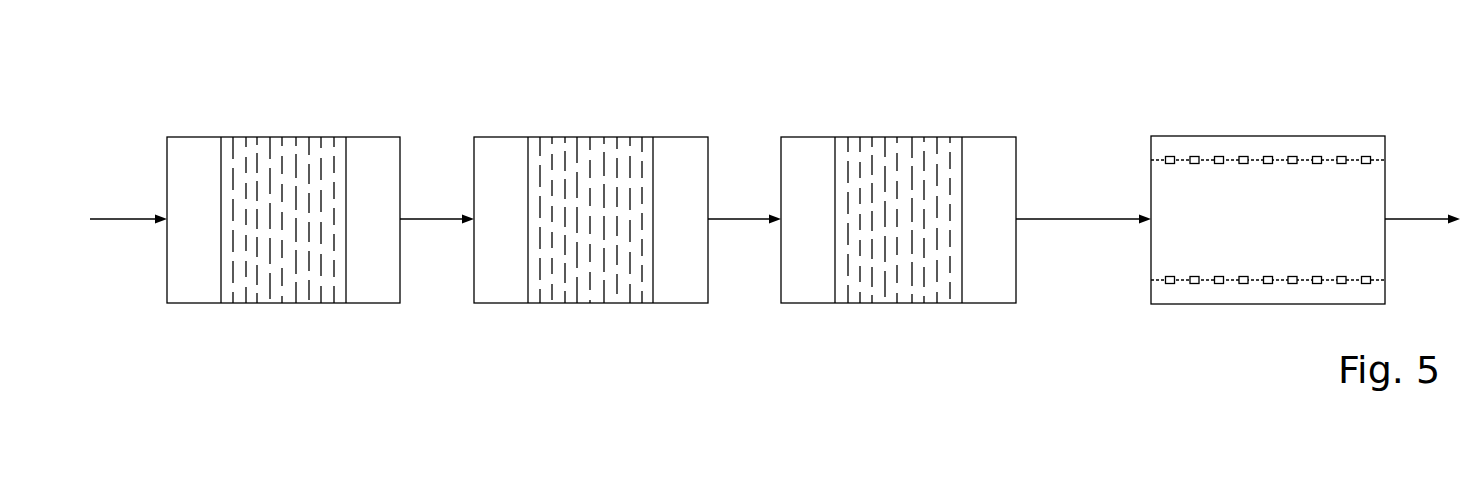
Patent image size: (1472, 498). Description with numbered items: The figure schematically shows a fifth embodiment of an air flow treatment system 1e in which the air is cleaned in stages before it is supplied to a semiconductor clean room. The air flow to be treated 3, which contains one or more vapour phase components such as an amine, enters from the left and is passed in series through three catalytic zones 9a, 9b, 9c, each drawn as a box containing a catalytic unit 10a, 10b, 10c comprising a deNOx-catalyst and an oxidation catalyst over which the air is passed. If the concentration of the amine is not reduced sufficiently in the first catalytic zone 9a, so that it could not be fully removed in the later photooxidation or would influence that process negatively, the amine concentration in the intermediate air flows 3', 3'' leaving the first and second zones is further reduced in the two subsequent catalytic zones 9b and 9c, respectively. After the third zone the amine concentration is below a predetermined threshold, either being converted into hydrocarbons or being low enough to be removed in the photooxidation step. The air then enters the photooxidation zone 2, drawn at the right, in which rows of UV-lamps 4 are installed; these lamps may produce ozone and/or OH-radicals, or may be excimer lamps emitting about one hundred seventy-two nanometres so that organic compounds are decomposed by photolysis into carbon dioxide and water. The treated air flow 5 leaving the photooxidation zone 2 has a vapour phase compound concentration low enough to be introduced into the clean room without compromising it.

The air treatment system 1e is at (1268, 202).
The photooxidation zone 2 is at (1193, 297).
The air flow to be treated 3 is at (128, 181).
The air flow 3' is at (437, 181).
The air flow 3'' is at (744, 181).
The UV-lamps 4 is at (1342, 157).
The treated air flow 5 is at (1411, 218).
The first catalytic zone 9a is at (378, 137).
The second catalytic zone 9b is at (685, 137).
The third catalytic zone 9c is at (992, 137).
The catalytic unit 10a is at (283, 275).
The catalytic unit 10b is at (590, 275).
The catalytic unit 10c is at (897, 275).